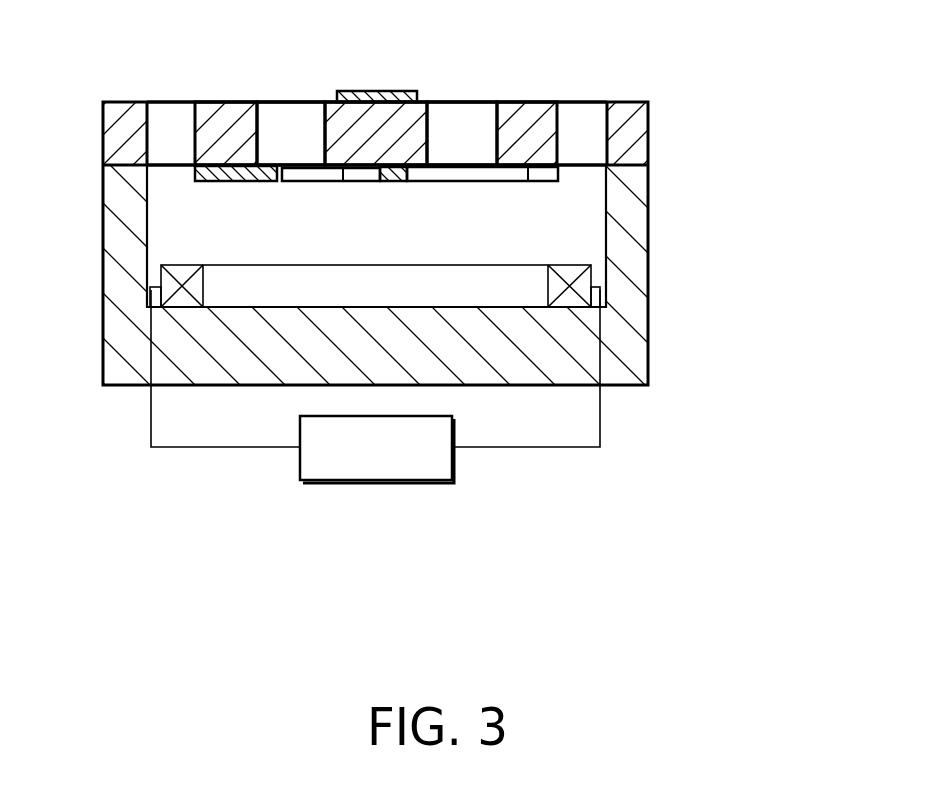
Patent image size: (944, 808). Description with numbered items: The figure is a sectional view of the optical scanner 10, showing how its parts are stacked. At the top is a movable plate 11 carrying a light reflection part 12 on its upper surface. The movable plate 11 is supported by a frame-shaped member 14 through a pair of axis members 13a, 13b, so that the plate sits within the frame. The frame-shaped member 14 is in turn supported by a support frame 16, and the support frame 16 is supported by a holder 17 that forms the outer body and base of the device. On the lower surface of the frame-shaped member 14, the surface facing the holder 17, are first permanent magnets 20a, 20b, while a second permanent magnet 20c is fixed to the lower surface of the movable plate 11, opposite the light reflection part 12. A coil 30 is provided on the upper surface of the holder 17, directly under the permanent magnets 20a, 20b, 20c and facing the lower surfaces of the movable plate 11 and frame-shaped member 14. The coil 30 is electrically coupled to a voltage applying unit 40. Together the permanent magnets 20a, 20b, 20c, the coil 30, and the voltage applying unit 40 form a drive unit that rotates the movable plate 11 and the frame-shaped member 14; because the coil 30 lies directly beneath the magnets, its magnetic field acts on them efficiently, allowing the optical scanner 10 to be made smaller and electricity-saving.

The optical scanner 10 is at (756, 79).
The movable plate 11 is at (430, 122).
The light reflection part 12 is at (390, 93).
The axis member 13a is at (472, 128).
The axis member 13b is at (290, 128).
The frame-shaped member 14 is at (215, 128).
The support frame 16 is at (123, 135).
The holder 17 is at (637, 270).
The permanent magnet 20a is at (498, 175).
The permanent magnet 20b is at (236, 183).
The permanent magnet 20c is at (393, 185).
The coil 30 is at (498, 288).
The voltage applying unit 40 is at (427, 480).